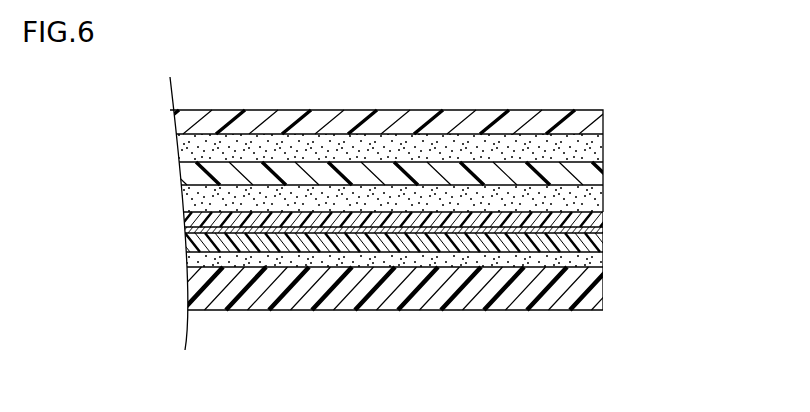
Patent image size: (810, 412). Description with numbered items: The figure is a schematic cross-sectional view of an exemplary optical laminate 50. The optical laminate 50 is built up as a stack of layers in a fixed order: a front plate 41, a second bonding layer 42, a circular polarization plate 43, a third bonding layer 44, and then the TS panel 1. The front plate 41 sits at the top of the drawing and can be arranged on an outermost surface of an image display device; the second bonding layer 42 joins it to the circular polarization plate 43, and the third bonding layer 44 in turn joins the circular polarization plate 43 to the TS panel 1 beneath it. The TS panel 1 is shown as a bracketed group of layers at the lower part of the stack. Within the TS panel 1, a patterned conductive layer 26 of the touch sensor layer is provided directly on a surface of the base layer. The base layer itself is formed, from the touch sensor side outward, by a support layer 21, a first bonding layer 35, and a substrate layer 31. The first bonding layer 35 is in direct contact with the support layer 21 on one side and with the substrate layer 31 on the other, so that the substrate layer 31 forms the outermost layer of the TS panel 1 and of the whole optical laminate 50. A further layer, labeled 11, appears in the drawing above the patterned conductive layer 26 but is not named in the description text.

The optical laminate 50 is at (638, 70).
The front plate 41 is at (605, 121).
The second bonding layer 42 is at (605, 146).
The circular polarization plate 43 is at (605, 170).
The third bonding layer 44 is at (605, 194).
The TS panel 1 is at (622, 212).
The first layer 11 is at (184, 217).
The patterned conductive layer 26 is at (186, 231).
The support layer 21 is at (187, 243).
The first bonding layer 35 is at (190, 258).
The substrate layer 31 is at (205, 282).